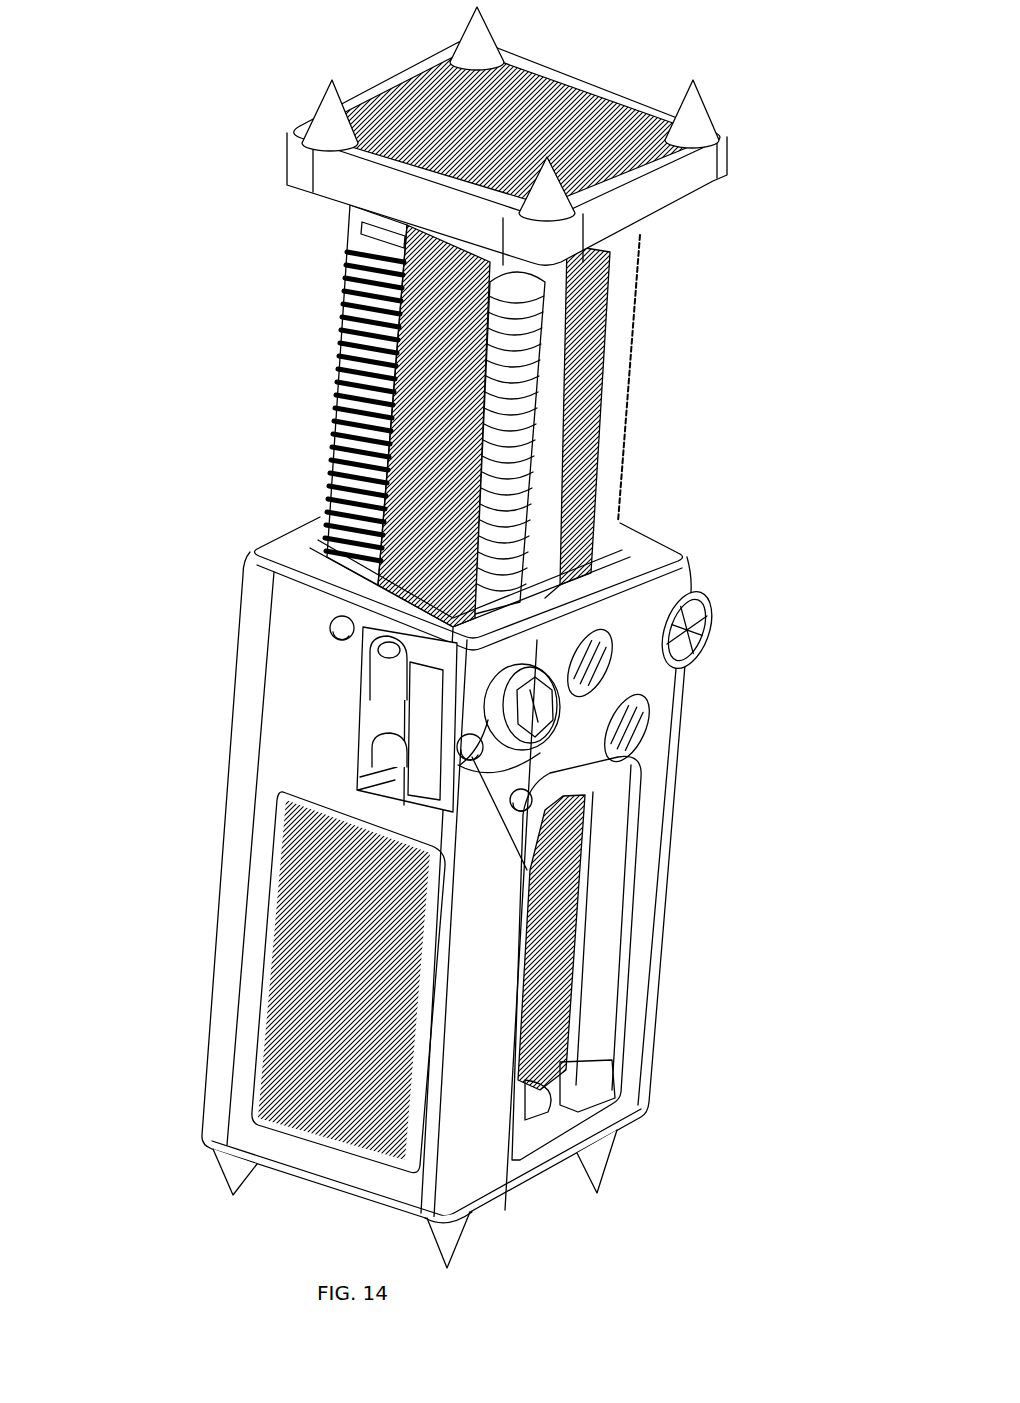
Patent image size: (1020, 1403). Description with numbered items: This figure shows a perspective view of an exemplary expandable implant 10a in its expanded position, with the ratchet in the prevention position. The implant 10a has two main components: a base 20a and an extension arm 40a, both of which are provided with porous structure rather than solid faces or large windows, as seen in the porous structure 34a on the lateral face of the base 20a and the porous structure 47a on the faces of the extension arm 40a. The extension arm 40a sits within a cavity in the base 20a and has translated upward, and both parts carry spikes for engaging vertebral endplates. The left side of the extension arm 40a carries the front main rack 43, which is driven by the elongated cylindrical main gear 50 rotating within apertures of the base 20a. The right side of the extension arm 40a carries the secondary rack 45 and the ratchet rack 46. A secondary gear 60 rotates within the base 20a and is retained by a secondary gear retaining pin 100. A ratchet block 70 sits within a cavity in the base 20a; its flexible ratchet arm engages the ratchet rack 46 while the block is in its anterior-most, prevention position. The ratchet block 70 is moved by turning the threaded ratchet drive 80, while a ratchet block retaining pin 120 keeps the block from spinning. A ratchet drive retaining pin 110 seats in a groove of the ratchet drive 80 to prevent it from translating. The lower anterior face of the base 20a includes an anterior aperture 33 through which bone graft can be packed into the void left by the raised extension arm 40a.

The implant 10a is at (178, 108).
The extension arm 40a is at (302, 172).
The secondary rack 45 is at (353, 291).
The porous structure 47a is at (340, 426).
The front main rack 43 is at (650, 325).
The ratchet rack 46 is at (530, 483).
The main gear 50 is at (705, 618).
The secondary gear retaining pin 100 is at (320, 627).
The secondary gear 60 is at (358, 686).
The ratchet block 70 is at (410, 713).
The ratchet drive 80 is at (548, 728).
The ratchet block retaining pin 120 is at (540, 807).
The porous structure 34a is at (352, 915).
The anterior aperture 33 is at (613, 960).
The ratchet drive retaining pin 110 is at (573, 962).
The base 20a is at (447, 1170).